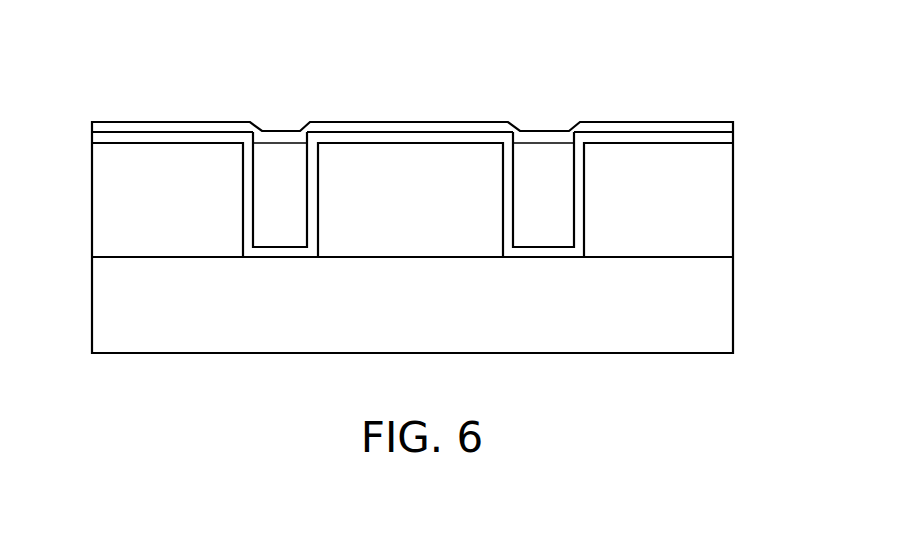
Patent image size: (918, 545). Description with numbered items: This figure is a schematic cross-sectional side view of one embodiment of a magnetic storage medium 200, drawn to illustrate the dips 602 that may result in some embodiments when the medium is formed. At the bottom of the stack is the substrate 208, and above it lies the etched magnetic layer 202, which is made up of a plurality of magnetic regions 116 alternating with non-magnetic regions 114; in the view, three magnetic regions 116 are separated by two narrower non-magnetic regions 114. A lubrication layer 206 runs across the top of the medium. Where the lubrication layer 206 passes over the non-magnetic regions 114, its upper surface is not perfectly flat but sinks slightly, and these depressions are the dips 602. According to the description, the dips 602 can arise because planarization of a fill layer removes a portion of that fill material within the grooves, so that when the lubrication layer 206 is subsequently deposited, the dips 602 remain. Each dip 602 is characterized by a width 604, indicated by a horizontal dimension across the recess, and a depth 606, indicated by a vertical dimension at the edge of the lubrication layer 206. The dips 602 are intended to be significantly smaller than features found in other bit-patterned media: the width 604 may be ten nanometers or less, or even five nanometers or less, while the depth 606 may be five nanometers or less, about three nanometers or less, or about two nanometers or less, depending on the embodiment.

The magnetic storage medium 200 is at (112, 79).
The etched magnetic layer 202 is at (73, 140).
The lubrication layer 206 is at (450, 122).
The substrate 208 is at (387, 314).
The non-magnetic regions 114 is at (261, 209).
The magnetic regions 116 is at (141, 209).
The dips 602 is at (313, 107).
The width 604 is at (298, 89).
The depth 606 is at (755, 88).